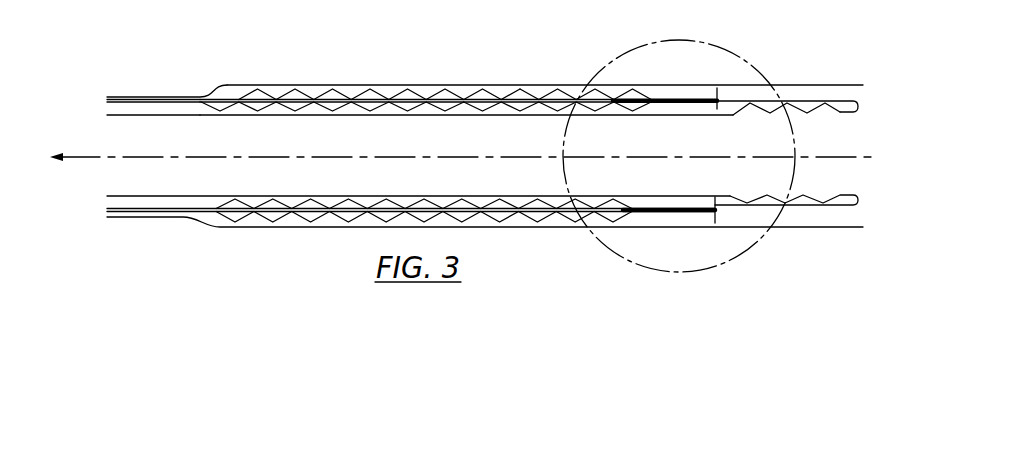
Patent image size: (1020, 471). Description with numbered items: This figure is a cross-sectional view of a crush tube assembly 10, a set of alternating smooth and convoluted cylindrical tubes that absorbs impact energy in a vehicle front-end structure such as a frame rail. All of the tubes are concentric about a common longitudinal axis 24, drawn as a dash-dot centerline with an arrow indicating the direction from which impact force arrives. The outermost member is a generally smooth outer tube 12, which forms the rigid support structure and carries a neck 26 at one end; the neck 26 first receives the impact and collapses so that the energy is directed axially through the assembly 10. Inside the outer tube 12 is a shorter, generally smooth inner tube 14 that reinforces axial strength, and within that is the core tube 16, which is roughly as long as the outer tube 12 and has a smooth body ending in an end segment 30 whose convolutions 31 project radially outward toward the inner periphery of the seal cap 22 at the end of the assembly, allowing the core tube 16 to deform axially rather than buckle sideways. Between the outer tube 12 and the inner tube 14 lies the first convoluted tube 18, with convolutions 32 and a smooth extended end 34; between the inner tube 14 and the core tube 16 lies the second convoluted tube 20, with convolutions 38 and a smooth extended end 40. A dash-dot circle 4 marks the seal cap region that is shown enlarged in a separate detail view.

The detail region of FIG. 4 is at (713, 43).
The crush tube assembly 10 is at (295, 64).
The outer tube 12 is at (227, 86).
The inner tube 14 is at (260, 101).
The core tube 16 is at (303, 117).
The first convoluted tube 18 is at (370, 89).
The second convoluted tube 20 is at (437, 110).
The seal cap 22 is at (737, 102).
The longitudinal axis 24 is at (370, 158).
The neck 26 is at (165, 97).
The end segment 30 is at (855, 114).
The convolutions 31 is at (757, 107).
The convolutions 32 is at (520, 88).
The smooth extended end 34 is at (125, 97).
The convolutions 38 is at (487, 113).
The smooth extended end 40 is at (113, 105).